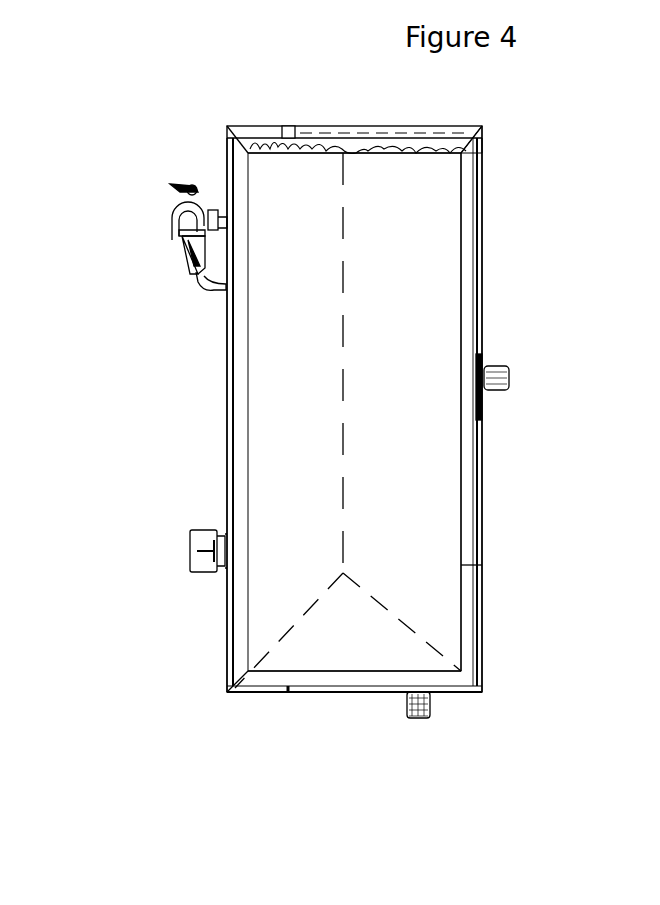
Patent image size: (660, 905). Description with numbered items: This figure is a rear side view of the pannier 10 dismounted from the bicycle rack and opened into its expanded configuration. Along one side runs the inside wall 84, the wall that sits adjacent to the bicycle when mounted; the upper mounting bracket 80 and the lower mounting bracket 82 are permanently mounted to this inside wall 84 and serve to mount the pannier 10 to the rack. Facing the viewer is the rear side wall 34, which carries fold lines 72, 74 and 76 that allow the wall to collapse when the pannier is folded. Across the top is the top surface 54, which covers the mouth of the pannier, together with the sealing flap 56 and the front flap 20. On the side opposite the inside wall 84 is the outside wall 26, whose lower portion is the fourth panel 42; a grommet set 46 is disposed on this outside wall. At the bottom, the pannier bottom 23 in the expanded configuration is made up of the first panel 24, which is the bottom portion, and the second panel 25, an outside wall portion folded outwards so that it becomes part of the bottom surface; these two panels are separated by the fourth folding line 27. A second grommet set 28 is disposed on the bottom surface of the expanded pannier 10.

The pannier 10 is at (523, 128).
The front flap 20 is at (502, 238).
The pannier bottom 23 is at (304, 716).
The first panel 24 is at (260, 702).
The second panel 25 is at (352, 700).
The outside wall 26 is at (492, 494).
The fourth folding line 27 is at (291, 702).
The grommet set 28 is at (426, 734).
The rear side wall 34 is at (437, 331).
The fourth panel 42 is at (498, 629).
The grommet set 46 is at (514, 369).
The top surface 54 is at (297, 111).
The sealing flap 56 is at (486, 158).
The fold line 72 is at (358, 443).
The fold line 74 is at (293, 600).
The fold line 76 is at (393, 600).
The upper mounting bracket 80 is at (148, 258).
The lower mounting bracket 82 is at (186, 548).
The inside wall panel 84 is at (203, 392).